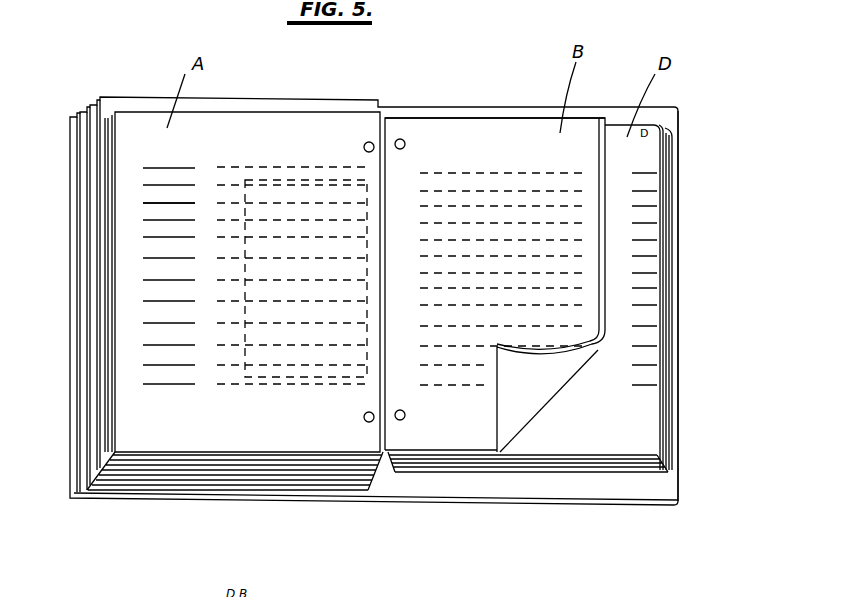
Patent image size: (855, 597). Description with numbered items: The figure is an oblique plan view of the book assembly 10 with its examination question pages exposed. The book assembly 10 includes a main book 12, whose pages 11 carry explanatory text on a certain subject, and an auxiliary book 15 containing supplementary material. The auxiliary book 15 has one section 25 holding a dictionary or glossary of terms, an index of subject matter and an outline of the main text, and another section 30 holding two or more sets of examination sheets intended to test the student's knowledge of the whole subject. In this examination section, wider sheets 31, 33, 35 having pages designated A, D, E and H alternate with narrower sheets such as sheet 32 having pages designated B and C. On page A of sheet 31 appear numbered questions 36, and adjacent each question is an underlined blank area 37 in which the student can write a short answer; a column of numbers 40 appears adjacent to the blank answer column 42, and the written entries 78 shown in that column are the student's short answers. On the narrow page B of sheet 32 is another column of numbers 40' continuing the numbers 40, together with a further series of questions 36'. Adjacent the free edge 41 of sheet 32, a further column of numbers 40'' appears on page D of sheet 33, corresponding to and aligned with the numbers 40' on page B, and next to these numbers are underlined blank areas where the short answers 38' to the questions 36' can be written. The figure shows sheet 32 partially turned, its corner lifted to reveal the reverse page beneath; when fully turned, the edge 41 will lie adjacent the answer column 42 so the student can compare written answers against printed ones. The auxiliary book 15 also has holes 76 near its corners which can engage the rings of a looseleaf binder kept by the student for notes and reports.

The book assembly 10 is at (709, 318).
The pages 11 is at (97, 446).
The main book 12 is at (182, 494).
The auxiliary book 15 is at (495, 112).
The section 25 is at (275, 476).
The section 30 is at (562, 473).
The wider sheet 31 is at (270, 113).
The narrower sheet 32 is at (417, 112).
The wider sheet 33 is at (615, 125).
The wider sheet 35 is at (668, 146).
The numbered questions 36 is at (291, 216).
The further series of questions 36' is at (509, 362).
The underlined blank area 37 is at (162, 207).
The short answers 38' is at (684, 275).
The column of numbers 40 is at (72, 283).
The column of numbers 40' is at (441, 468).
The column of numbers 40'' is at (674, 276).
The free edge 41 is at (608, 158).
The blank answer column 42 is at (155, 130).
The holes 76 is at (399, 138).
The answer entries 78 is at (158, 173).